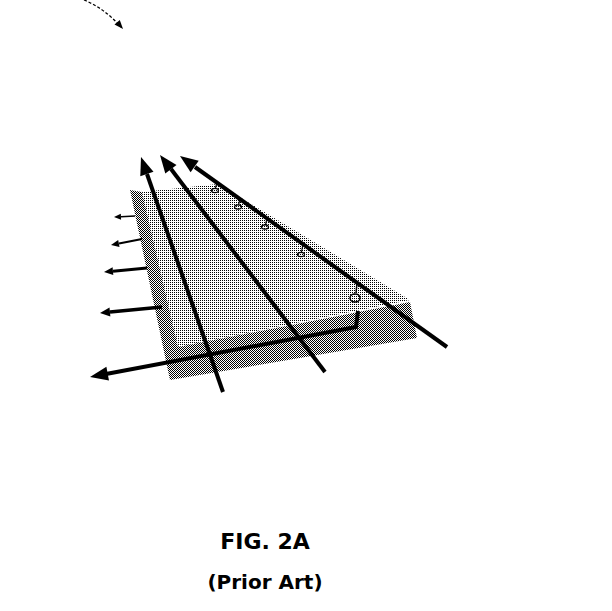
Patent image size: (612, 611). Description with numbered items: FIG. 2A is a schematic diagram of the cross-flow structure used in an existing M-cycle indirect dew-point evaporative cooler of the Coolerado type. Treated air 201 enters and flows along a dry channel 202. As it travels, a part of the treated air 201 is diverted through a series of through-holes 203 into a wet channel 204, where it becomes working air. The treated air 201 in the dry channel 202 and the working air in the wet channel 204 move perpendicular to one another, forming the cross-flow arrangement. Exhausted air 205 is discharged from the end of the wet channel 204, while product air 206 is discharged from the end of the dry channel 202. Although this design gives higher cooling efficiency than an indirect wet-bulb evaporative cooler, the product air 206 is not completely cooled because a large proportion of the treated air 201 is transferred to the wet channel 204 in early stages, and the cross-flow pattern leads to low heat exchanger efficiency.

The treated air 201 is at (224, 366).
The dry channel 202 is at (267, 246).
The through-holes 203 is at (362, 287).
The wet channel 204 is at (196, 373).
The exhausted air 205 is at (99, 265).
The product air 206 is at (223, 254).